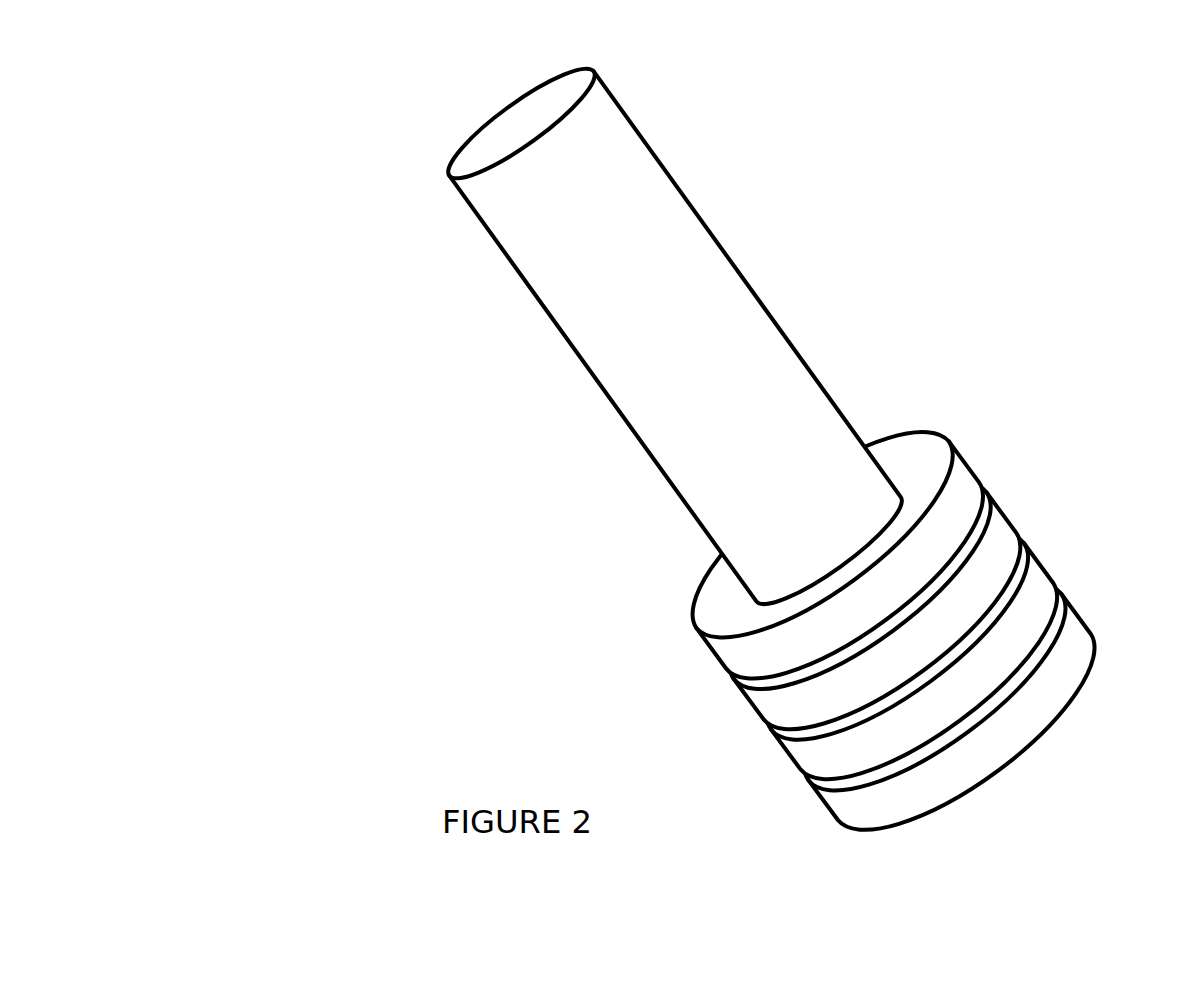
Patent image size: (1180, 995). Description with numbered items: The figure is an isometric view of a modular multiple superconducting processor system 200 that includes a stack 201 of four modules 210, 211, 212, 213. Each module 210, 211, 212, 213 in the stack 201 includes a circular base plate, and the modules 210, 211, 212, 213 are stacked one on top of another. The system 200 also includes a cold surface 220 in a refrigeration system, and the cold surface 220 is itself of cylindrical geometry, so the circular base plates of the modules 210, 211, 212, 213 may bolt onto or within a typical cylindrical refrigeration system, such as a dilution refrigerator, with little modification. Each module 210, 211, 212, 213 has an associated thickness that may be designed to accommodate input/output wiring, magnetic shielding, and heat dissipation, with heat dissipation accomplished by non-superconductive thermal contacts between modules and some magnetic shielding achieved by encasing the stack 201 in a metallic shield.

The modular multiple superconducting processor system 200 is at (253, 169).
The stack 201 is at (888, 622).
The module 210 is at (698, 633).
The module 211 is at (733, 677).
The module 212 is at (777, 733).
The module 213 is at (818, 788).
The cold surface 220 is at (703, 222).